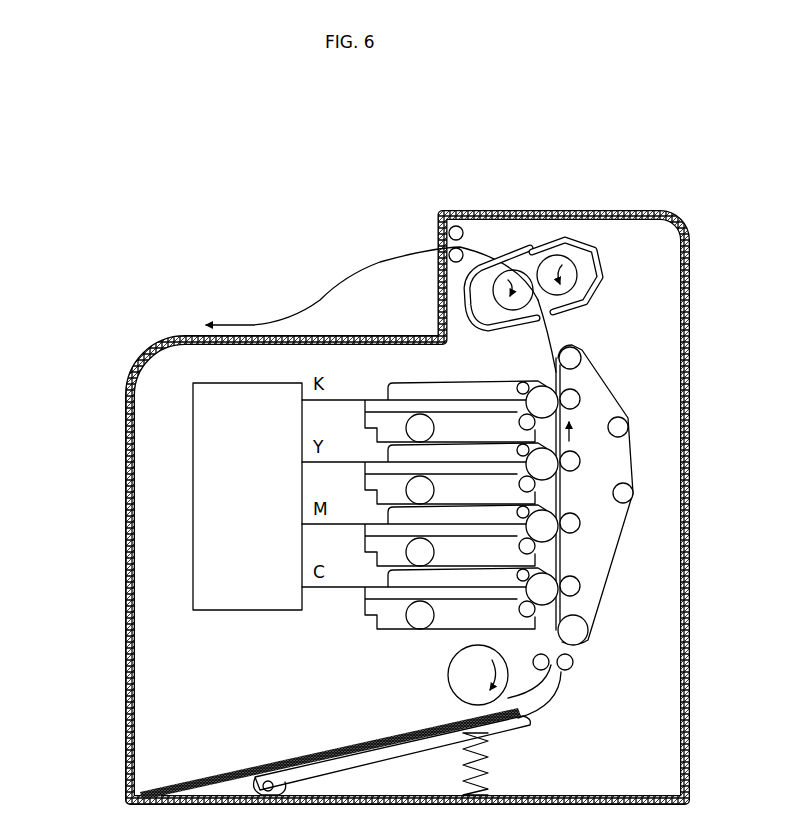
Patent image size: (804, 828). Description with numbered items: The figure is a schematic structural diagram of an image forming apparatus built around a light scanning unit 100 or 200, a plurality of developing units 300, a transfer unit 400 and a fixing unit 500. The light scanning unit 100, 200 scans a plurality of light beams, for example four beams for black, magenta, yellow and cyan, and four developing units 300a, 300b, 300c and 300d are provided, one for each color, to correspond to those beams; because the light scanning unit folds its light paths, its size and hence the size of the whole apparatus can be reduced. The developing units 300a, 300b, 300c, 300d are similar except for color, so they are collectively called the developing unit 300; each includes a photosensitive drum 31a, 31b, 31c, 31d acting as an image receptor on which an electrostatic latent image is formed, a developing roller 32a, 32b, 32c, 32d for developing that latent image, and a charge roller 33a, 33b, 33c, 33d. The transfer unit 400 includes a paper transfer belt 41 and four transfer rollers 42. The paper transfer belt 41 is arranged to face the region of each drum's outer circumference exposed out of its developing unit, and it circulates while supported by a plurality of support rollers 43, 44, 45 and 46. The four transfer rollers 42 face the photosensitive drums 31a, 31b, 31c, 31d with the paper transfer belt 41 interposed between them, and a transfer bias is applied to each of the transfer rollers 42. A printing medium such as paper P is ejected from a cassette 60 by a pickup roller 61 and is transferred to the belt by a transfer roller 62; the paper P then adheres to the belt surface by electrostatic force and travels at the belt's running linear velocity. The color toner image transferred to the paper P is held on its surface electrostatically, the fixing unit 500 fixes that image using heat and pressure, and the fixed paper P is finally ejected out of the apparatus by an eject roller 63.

The eject roller 63 is at (458, 226).
The fixing unit 500 is at (614, 276).
The transfer unit 400 is at (622, 339).
The support roller 44 is at (582, 358).
The paper transfer belt 41 is at (582, 398).
The support roller 46 is at (630, 427).
The transfer rollers 42 is at (585, 602).
The support roller 45 is at (635, 493).
The support roller 43 is at (590, 630).
The photosensitive drum 31a is at (540, 386).
The developing roller 32a is at (519, 417).
The charge roller 33a is at (518, 383).
The photosensitive drum 31b is at (553, 474).
The developing roller 32b is at (520, 484).
The charge roller 33b is at (517, 451).
The photosensitive drum 31c is at (553, 536).
The developing roller 32c is at (520, 546).
The charge roller 33c is at (517, 513).
The photosensitive drum 31d is at (549, 607).
The developing roller 32d is at (520, 609).
The charge roller 33d is at (517, 576).
The developing unit 300a is at (362, 407).
The developing unit 300b is at (362, 470).
The developing unit 300c is at (362, 533).
The developing unit 300d is at (362, 597).
The developing unit 300 is at (346, 641).
The light scanning unit 100 is at (171, 496).
The light scanning unit 200 is at (183, 502).
The pickup roller 61 is at (474, 676).
The transfer roller 62 is at (532, 659).
The cassette 60 is at (212, 768).
The paper P is at (288, 757).